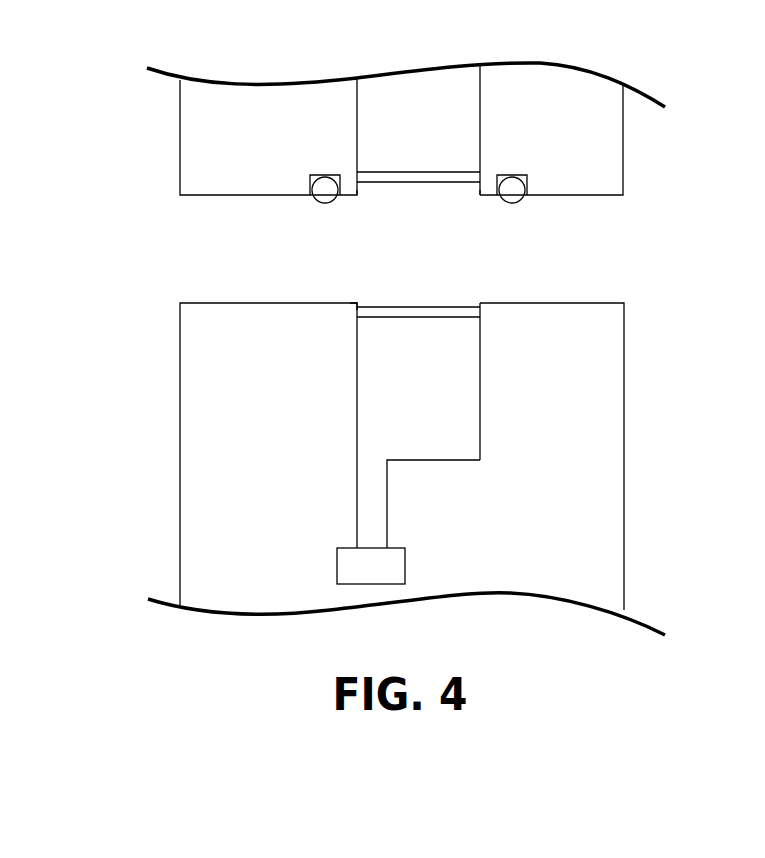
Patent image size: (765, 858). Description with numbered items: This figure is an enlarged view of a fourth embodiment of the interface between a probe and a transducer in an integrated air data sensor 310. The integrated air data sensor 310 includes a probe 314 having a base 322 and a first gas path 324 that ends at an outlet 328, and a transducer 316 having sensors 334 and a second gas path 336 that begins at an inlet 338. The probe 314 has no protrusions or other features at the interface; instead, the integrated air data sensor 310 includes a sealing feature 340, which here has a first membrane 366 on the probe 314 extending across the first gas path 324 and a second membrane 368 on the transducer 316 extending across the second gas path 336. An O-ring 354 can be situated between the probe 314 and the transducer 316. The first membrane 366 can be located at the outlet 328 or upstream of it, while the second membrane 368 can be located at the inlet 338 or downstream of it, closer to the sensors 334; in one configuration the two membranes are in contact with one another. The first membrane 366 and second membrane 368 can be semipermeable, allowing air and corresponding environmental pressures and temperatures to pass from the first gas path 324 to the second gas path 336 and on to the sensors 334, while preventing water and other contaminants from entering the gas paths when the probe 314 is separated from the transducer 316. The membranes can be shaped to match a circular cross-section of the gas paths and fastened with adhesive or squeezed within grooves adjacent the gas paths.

The integrated air data sensor 310 is at (82, 290).
The probe 314 is at (120, 142).
The transducer 316 is at (142, 518).
The base 322 is at (302, 95).
The first gas path 324 is at (417, 102).
The outlet 328 is at (423, 198).
The sensors 334 is at (350, 572).
The second gas path 336 is at (407, 428).
The inlet 338 is at (435, 292).
The sealing feature 340 is at (345, 306).
The O-ring 354 is at (323, 190).
The first membrane 366 is at (405, 170).
The second membrane 368 is at (378, 320).